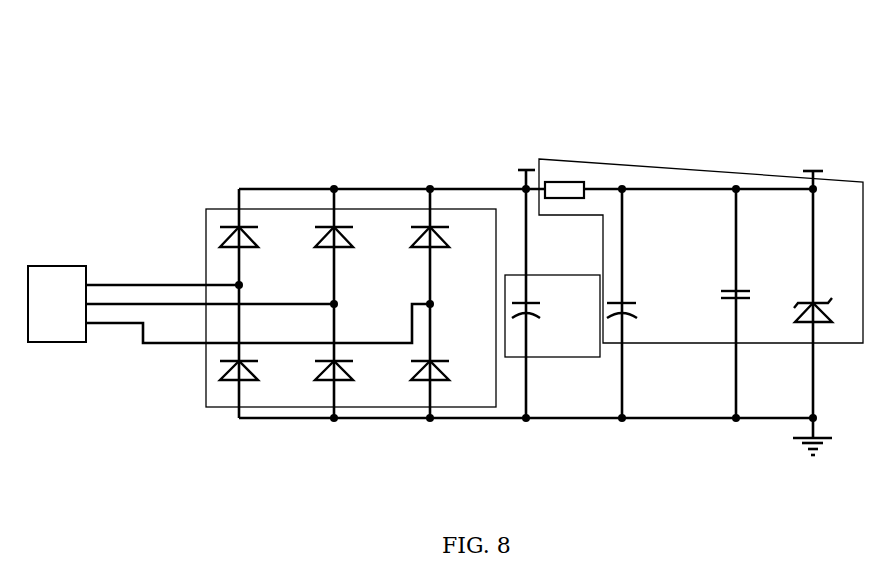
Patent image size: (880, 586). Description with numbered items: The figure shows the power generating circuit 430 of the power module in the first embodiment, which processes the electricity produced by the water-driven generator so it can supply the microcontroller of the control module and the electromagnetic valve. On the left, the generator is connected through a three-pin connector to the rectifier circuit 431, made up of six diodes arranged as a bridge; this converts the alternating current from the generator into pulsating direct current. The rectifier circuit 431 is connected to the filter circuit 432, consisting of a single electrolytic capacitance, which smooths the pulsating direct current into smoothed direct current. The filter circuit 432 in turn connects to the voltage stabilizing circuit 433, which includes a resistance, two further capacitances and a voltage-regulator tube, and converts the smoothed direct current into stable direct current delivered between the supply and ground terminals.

The power generating circuit 430 is at (330, 117).
The rectifier circuit 431 is at (207, 408).
The filter circuit 432 is at (516, 356).
The voltage stabilizing circuit 433 is at (748, 343).